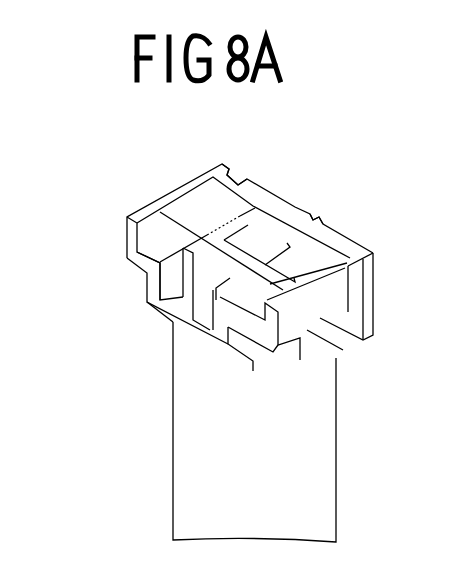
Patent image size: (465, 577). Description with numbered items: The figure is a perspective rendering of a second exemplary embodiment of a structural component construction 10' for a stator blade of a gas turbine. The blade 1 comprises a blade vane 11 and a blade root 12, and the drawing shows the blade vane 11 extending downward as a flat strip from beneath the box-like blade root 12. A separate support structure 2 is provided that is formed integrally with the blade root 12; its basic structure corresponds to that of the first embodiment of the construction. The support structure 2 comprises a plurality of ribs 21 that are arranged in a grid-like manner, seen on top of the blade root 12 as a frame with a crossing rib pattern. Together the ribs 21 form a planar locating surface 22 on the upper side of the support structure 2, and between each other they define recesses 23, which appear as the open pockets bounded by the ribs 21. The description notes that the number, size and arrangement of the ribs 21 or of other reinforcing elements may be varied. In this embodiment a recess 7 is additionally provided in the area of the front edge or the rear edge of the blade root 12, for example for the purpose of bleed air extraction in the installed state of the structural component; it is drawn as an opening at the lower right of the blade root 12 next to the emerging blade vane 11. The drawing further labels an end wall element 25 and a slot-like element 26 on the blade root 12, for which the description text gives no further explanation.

The structural component construction 10' is at (75, 170).
The blade 1 is at (150, 407).
The support structure 2 is at (310, 214).
The recess 7 is at (325, 355).
The blade vane 11 is at (188, 467).
The blade root 12 is at (168, 315).
The ribs 21 is at (183, 287).
The planar locating surface 22 is at (255, 208).
The recesses 23 is at (322, 245).
The end plate 25 is at (372, 292).
The slot 26 is at (302, 358).